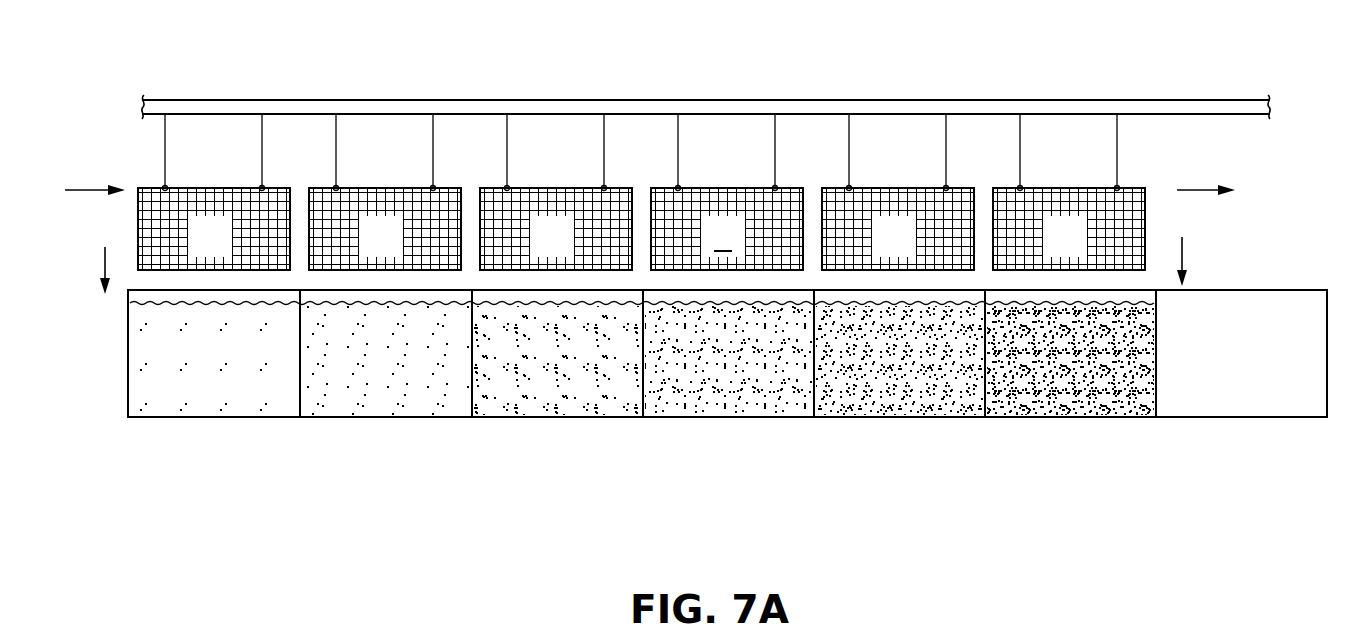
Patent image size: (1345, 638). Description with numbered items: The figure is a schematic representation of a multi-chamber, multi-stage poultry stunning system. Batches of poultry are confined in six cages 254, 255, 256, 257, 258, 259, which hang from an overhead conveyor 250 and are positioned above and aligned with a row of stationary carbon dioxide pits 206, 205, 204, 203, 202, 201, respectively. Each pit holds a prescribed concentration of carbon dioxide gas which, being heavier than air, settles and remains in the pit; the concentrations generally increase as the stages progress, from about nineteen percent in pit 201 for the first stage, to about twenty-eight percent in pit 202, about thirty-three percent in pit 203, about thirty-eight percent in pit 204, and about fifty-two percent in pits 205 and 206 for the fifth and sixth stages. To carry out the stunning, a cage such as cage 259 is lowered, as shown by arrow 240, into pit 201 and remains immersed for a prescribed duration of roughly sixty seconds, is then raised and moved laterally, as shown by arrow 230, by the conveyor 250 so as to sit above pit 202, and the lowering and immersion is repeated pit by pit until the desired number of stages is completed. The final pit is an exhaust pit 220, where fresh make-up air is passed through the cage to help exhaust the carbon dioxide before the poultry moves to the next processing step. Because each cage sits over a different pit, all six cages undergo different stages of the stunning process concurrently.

The conveyor 250 is at (705, 100).
The cage 259 is at (182, 196).
The cage 258 is at (353, 196).
The cage 257 is at (524, 196).
The cage 256 is at (695, 196).
The cage 255 is at (866, 196).
The cage 254 is at (1037, 196).
The arrow 230 is at (83, 189).
The arrow 240 is at (103, 258).
The exhaust pit 220 is at (1242, 417).
The carbon dioxide pit 201 is at (214, 417).
The carbon dioxide pit 202 is at (386, 417).
The carbon dioxide pit 203 is at (558, 417).
The carbon dioxide pit 204 is at (729, 417).
The carbon dioxide pit 205 is at (900, 417).
The carbon dioxide pit 206 is at (1071, 417).